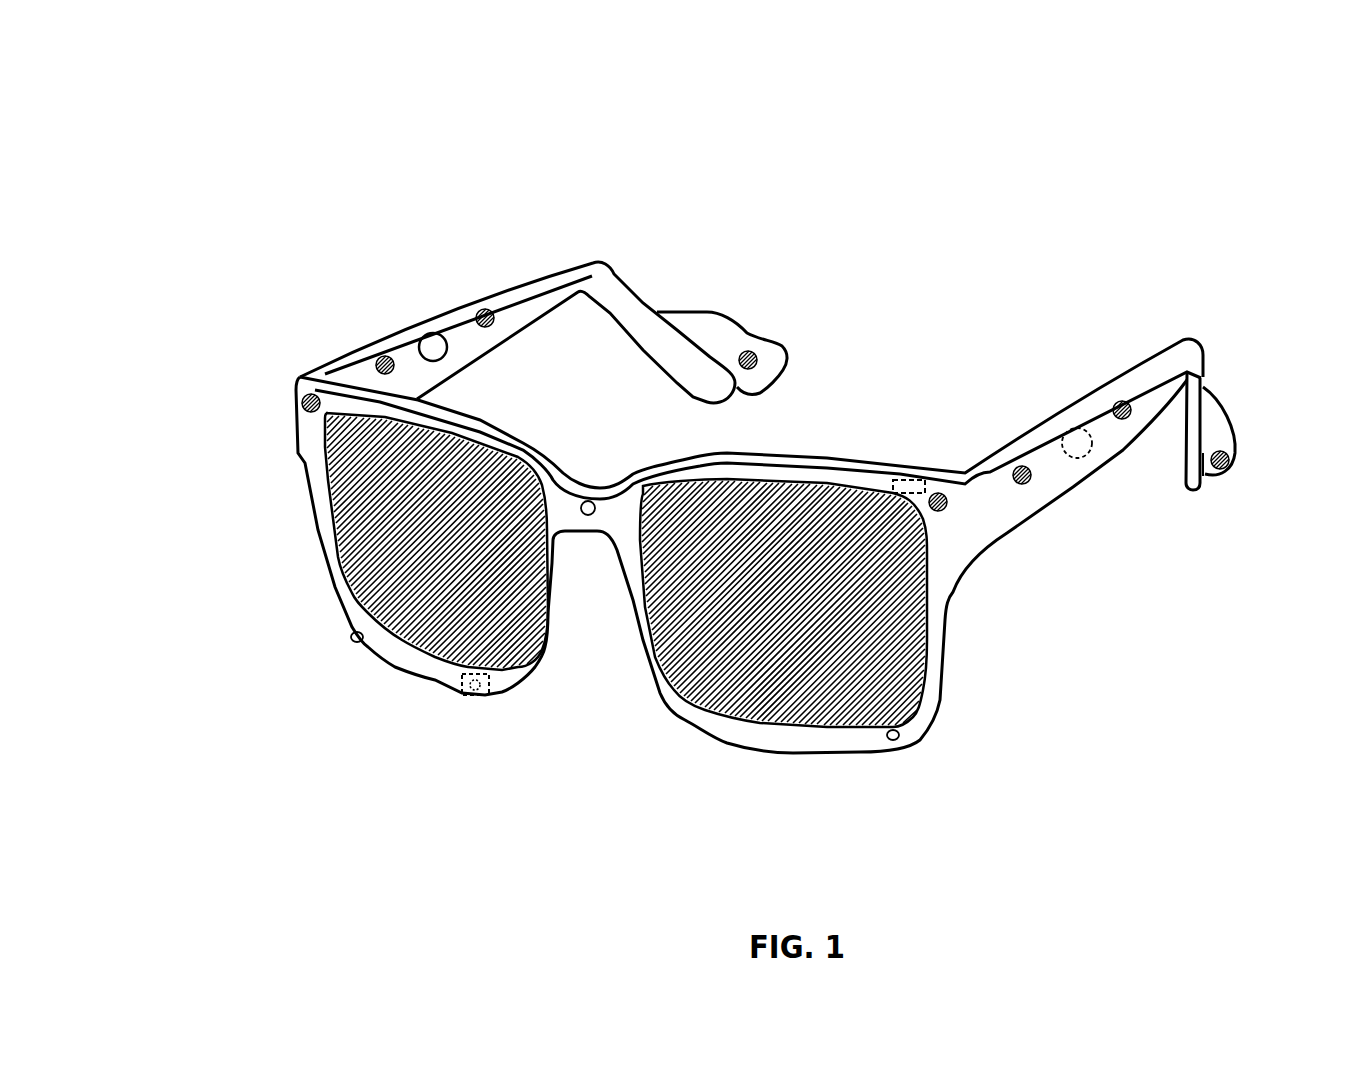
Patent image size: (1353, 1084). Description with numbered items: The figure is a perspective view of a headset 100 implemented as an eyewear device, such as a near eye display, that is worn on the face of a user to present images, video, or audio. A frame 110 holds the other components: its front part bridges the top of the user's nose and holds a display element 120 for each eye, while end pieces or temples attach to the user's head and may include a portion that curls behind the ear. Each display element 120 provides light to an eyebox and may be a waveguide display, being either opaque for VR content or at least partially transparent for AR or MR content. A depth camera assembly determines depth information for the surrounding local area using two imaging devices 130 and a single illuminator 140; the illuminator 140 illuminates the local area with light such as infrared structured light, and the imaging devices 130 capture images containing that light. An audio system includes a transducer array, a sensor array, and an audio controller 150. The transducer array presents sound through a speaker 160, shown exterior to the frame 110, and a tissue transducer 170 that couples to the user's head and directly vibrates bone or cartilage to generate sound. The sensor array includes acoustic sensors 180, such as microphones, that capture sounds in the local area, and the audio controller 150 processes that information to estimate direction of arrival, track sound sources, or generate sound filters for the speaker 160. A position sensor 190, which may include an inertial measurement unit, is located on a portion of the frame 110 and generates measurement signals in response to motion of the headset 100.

The headset 100 is at (193, 93).
The frame 110 is at (1188, 337).
The display element 120 is at (377, 542).
The imaging device 130 is at (352, 641).
The illuminator 140 is at (588, 515).
The audio controller 150 is at (903, 480).
The speaker 160 is at (437, 333).
The tissue transducer 170 is at (707, 320).
The acoustic sensor 180 is at (311, 394).
The position sensor 190 is at (473, 696).